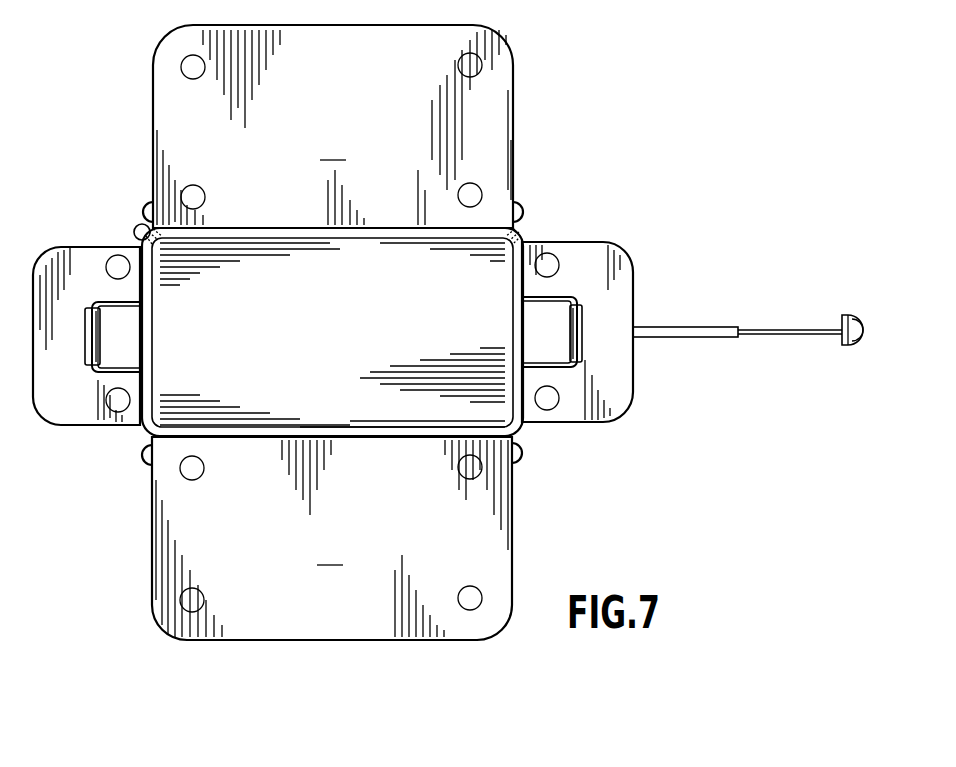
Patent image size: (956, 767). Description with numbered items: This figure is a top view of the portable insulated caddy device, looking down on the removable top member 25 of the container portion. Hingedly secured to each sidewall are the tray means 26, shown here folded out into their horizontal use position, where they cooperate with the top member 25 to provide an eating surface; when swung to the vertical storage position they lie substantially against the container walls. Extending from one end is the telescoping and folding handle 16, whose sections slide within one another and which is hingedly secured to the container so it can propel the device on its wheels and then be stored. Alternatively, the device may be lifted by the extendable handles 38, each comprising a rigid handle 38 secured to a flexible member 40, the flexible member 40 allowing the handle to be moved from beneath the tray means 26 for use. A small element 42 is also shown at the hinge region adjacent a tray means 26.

The telescoping and folding handle 16 is at (688, 325).
The removable top member 25 is at (320, 363).
The tray means 26 is at (73, 262).
The extendable handle 38 is at (88, 357).
The flexible member 40 is at (123, 308).
The pivot pin 42 is at (136, 226).